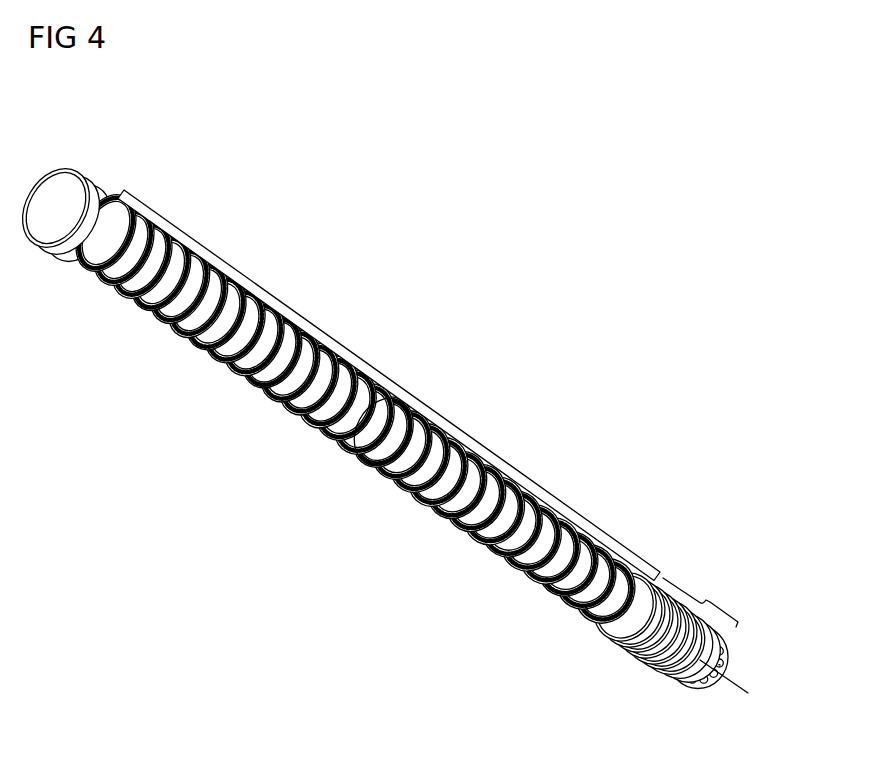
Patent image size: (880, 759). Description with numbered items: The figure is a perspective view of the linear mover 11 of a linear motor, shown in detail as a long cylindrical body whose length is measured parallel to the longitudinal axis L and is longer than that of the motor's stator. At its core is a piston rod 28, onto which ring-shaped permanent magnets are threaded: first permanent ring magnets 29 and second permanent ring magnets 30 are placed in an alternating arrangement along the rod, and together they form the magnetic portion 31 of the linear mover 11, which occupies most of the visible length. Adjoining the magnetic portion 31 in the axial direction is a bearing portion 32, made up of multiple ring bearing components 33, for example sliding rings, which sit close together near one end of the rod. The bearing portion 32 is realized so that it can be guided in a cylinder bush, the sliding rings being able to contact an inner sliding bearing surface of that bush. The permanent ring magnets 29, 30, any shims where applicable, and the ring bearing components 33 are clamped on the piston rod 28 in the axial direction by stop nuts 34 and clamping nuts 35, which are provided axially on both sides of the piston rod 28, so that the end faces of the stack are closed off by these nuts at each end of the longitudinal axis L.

The linear mover 11 is at (362, 258).
The piston rod 28 is at (699, 668).
The first permanent ring magnets 29 is at (446, 512).
The second permanent ring magnets 30 is at (402, 488).
The magnetic portion 31 is at (402, 396).
The bearing portion 32 is at (700, 601).
The ring bearing components 33 is at (636, 648).
The stop nuts 34 is at (660, 670).
The clamping nuts 35 is at (728, 650).
The longitudinal axis L is at (742, 686).